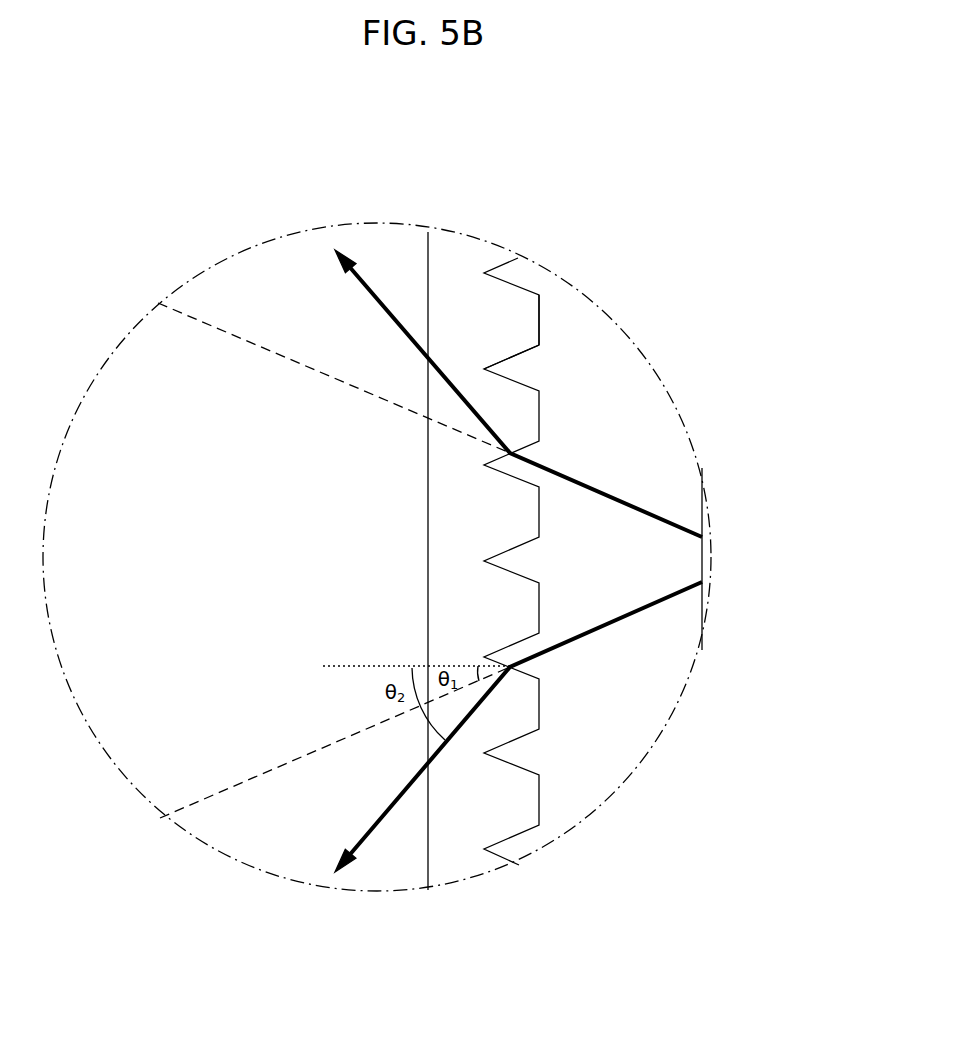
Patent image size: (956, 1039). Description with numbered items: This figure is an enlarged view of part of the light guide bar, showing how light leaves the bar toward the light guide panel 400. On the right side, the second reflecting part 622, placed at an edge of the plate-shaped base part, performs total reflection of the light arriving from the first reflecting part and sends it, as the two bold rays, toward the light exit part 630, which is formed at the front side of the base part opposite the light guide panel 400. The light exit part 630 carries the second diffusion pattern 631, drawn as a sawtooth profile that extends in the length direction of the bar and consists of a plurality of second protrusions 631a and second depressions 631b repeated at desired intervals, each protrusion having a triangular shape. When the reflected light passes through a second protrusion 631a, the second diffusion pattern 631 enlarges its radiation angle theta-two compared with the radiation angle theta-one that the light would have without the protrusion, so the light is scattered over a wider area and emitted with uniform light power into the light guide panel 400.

The light guide panel 400 is at (280, 853).
The light exit part 630 is at (610, 370).
The second diffusion pattern 631 is at (570, 148).
The second protrusion 631a is at (493, 367).
The second depression 631b is at (539, 318).
The second reflecting part 622 is at (710, 557).